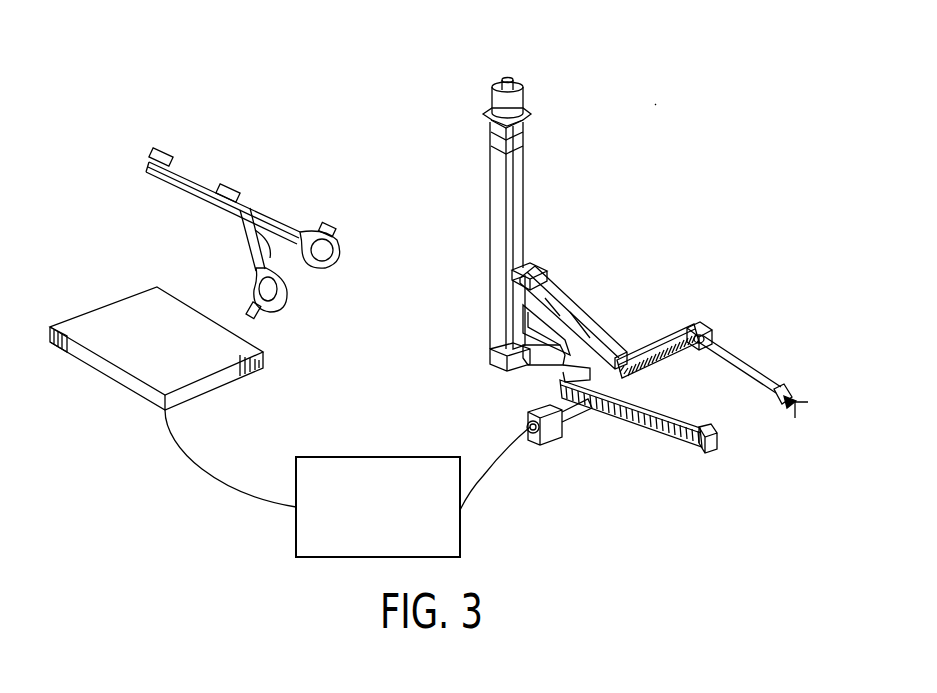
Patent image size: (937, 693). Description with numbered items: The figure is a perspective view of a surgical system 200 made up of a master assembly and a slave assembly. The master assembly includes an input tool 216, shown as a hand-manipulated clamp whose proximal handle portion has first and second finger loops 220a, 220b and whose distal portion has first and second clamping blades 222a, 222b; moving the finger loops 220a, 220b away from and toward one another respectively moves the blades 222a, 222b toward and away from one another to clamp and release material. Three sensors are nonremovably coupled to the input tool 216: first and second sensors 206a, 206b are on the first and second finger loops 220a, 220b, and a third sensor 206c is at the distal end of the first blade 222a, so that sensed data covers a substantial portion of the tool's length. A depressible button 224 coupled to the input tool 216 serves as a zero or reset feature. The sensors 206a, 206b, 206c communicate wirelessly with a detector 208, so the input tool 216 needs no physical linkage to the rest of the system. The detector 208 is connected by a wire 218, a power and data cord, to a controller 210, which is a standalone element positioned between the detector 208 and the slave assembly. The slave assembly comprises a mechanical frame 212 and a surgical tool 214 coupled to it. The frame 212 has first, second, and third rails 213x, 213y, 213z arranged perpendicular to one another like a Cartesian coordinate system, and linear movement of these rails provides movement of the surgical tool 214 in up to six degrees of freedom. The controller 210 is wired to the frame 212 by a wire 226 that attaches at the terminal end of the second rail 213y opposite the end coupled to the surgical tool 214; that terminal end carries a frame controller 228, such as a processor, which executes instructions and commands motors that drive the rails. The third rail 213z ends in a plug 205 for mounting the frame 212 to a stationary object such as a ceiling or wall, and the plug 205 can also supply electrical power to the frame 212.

The surgical system 200 is at (662, 100).
The plug 205 is at (530, 73).
The first sensor 206a is at (318, 220).
The second sensor 206b is at (264, 321).
The third sensor 206c is at (152, 150).
The detector 208 is at (103, 373).
The controller 210 is at (296, 528).
The mechanical frame 212 is at (547, 247).
The first rail 213x is at (664, 430).
The second rail 213y is at (657, 347).
The third rail 213z is at (525, 177).
The surgical tool 214 is at (774, 356).
The input tool 216 is at (226, 236).
The wire 218 is at (202, 463).
The first finger loop 220a is at (342, 243).
The second finger loop 220b is at (287, 300).
The first clamping blade 222a is at (163, 181).
The second clamping blade 222b is at (177, 166).
The depressible button 224 is at (239, 188).
The wire 226 is at (483, 478).
The frame controller 228 is at (553, 438).